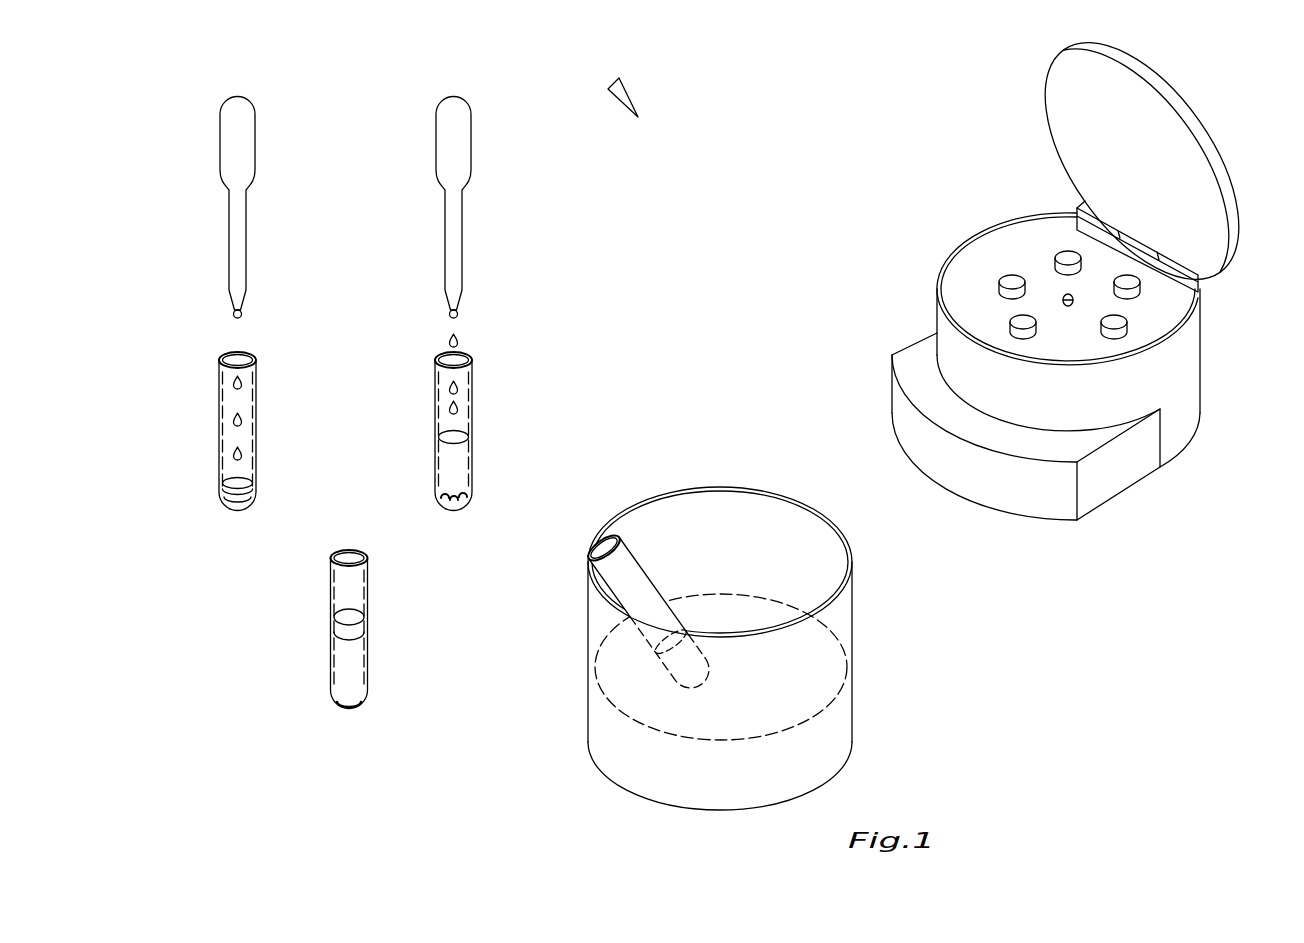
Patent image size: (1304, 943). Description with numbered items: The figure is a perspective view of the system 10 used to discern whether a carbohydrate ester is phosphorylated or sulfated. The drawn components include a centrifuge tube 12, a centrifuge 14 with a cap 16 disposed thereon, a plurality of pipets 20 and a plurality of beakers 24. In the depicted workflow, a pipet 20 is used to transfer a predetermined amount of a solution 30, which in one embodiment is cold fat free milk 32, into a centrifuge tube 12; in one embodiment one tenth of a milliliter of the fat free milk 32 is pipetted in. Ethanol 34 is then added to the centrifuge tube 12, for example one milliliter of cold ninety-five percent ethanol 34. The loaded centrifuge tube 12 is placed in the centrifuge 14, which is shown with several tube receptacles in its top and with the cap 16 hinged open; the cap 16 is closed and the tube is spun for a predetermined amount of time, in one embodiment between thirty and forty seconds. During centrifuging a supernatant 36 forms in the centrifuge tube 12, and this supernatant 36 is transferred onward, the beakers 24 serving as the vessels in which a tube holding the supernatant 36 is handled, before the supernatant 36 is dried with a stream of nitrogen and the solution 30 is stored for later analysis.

The system 10 is at (609, 89).
The centrifuge tube 12 is at (257, 383).
The centrifuge 14 is at (1200, 362).
The cap 16 is at (1198, 102).
The pipets 20 is at (221, 131).
The beakers 24 is at (853, 680).
The solution 30 is at (225, 494).
The fat free milk 32 is at (250, 493).
The ethanol 34 is at (460, 458).
The supernatant 36 is at (359, 668).